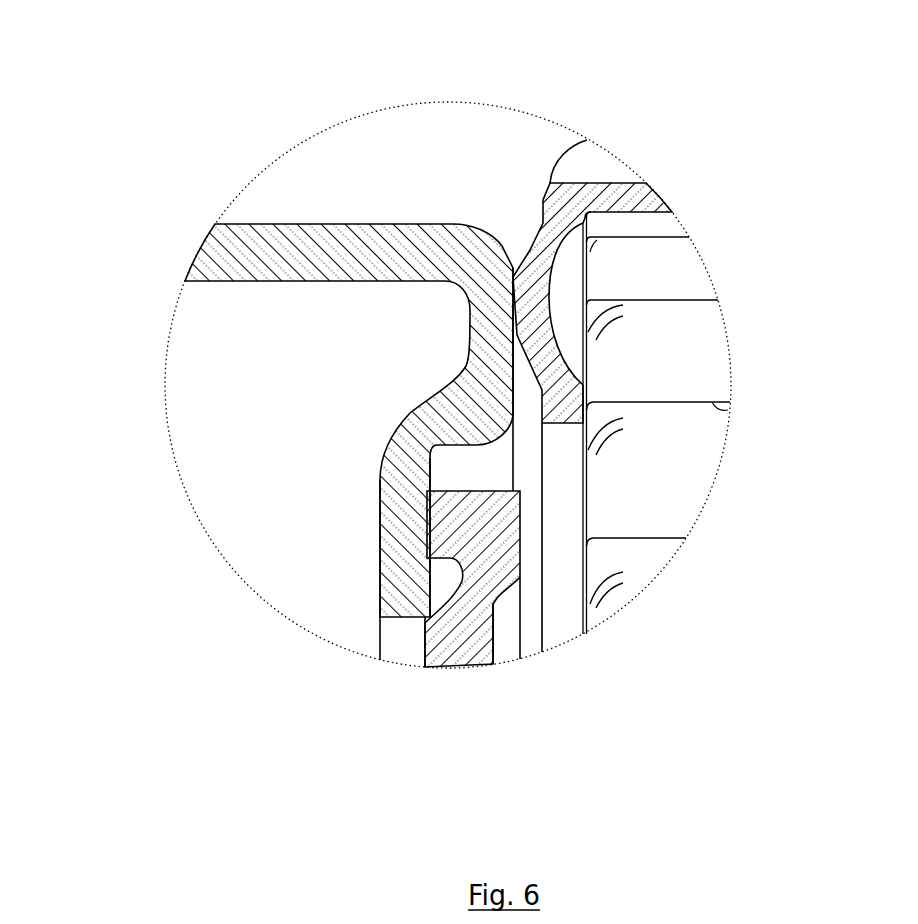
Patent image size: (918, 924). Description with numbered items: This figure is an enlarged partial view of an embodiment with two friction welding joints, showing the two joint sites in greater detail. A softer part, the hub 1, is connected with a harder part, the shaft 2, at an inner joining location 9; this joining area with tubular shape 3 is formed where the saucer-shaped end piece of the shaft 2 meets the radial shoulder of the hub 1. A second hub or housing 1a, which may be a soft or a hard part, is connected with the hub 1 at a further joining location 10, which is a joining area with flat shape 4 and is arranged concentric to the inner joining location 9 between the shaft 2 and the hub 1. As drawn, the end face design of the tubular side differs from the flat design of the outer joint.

The hub 1 is at (303, 248).
The hub or housing 1a is at (615, 202).
The shaft or gear 2 is at (467, 634).
The joining area with tubular shape 3 is at (455, 538).
The joining area with flat shape 4 is at (405, 538).
The joining location 9 is at (423, 513).
The joining location 10 is at (513, 307).